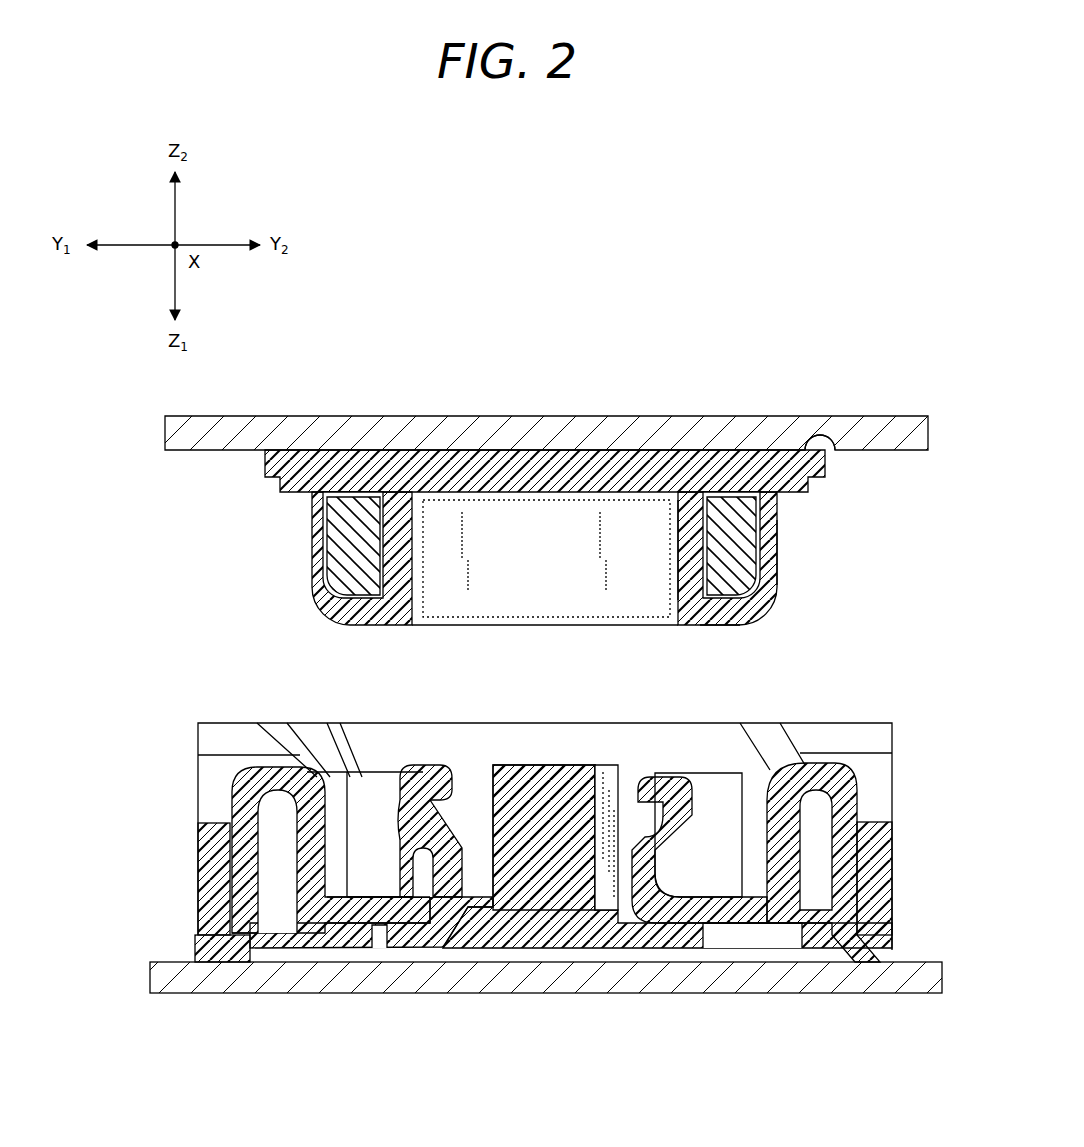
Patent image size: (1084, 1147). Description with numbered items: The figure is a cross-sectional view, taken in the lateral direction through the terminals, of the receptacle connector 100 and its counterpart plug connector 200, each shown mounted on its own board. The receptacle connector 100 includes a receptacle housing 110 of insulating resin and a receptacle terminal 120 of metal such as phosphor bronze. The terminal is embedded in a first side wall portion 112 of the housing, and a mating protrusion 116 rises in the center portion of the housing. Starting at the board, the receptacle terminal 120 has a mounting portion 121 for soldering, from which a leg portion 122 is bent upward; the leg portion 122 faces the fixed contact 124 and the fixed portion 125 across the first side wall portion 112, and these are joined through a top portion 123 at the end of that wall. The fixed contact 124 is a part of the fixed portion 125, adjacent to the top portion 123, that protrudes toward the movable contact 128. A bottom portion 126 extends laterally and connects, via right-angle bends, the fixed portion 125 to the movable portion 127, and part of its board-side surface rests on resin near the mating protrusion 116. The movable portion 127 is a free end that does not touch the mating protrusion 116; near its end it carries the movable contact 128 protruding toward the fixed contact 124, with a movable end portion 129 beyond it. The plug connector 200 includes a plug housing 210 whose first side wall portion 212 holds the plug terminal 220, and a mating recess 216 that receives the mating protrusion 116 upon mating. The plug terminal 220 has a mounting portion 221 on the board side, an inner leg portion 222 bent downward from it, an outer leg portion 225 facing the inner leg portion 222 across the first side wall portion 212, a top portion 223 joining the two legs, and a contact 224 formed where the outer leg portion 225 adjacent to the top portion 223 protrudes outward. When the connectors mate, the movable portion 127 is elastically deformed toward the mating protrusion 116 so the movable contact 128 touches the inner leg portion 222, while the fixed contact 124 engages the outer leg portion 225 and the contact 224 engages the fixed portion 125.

The receptacle connector 100 is at (505, 857).
The receptacle housing 110 is at (206, 716).
The first side wall portion 112 is at (272, 900).
The mating protrusion 116 is at (540, 768).
The receptacle terminal 120 is at (226, 786).
The mounting portion 121 is at (195, 975).
The leg portion 122 is at (240, 877).
The top portion 123 is at (270, 755).
The fixed contact 124 is at (332, 770).
The fixed portion 125 is at (323, 852).
The bottom portion 126 is at (342, 925).
The movable portion 127 is at (458, 963).
The movable contact 128 is at (368, 900).
The movable end portion 129 is at (446, 772).
The plug connector 200 is at (534, 517).
The plug housing 210 is at (422, 630).
The first side wall portion 212 is at (720, 500).
The mating recess 216 is at (527, 495).
The plug terminal 220 is at (758, 622).
The mounting portion 221 is at (832, 447).
The inner leg portion 222 is at (670, 545).
The top portion 223 is at (722, 628).
The contact 224 is at (780, 600).
The outer leg portion 225 is at (772, 548).